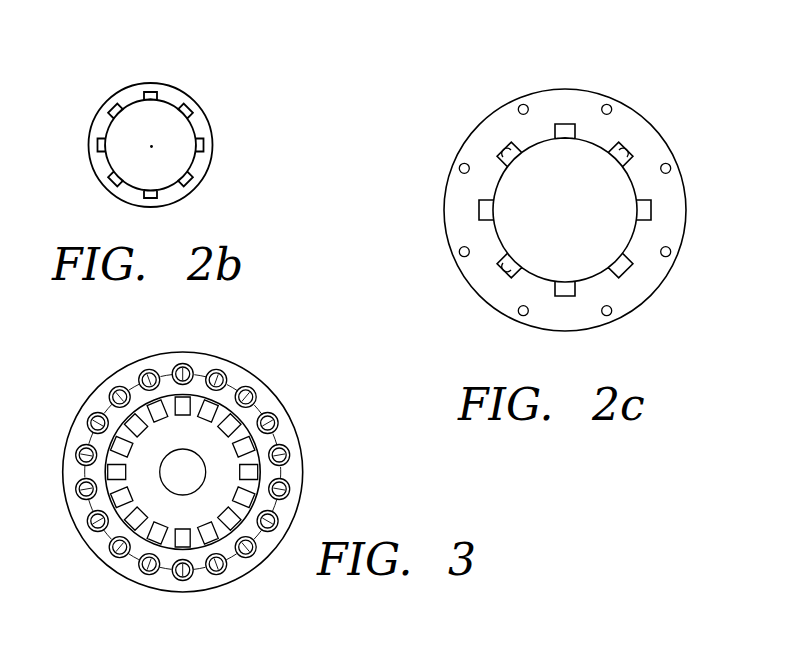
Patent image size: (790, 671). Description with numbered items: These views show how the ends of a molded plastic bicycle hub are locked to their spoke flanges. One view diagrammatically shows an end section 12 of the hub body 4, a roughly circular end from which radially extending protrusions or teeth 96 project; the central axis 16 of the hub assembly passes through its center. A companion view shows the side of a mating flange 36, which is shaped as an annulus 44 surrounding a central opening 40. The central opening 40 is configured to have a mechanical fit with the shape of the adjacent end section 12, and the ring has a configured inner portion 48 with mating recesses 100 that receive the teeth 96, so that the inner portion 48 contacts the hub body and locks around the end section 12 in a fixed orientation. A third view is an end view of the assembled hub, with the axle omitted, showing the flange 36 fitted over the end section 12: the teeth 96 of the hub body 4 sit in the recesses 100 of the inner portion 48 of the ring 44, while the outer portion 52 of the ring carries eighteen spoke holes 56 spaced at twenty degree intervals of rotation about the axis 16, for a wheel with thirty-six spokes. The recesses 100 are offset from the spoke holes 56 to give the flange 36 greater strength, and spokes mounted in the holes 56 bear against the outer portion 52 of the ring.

In FIG. 2b, the hub body 4 is at (163, 70).
In FIG. 3, the hub body 4 is at (183, 325).
In FIG. 2b, the end section 12 is at (203, 172).
In FIG. 3, the end section 12 is at (145, 473).
In FIG. 2b, the axis 16 is at (152, 146).
In FIG. 3, the axis 16 is at (183, 472).
In FIG. 2c, the flange 36 is at (588, 80).
In FIG. 2c, the central opening 40 is at (500, 242).
In FIG. 3, the central opening 40 is at (112, 506).
In FIG. 2c, the annulus 44 is at (633, 123).
In FIG. 3, the annulus 44 is at (283, 437).
In FIG. 2c, the inner portion 48 is at (635, 240).
In FIG. 3, the inner portion 48 is at (232, 417).
In FIG. 3, the outer portion 52 is at (277, 473).
In FIG. 2c, the spoke holes 56 is at (457, 160).
In FIG. 3, the spoke holes 56 is at (110, 398).
In FIG. 2b, the protrusions 96 is at (112, 106).
In FIG. 3, the protrusions 96 is at (113, 448).
In FIG. 2c, the recesses 100 is at (507, 150).
In FIG. 3, the recesses 100 is at (256, 426).